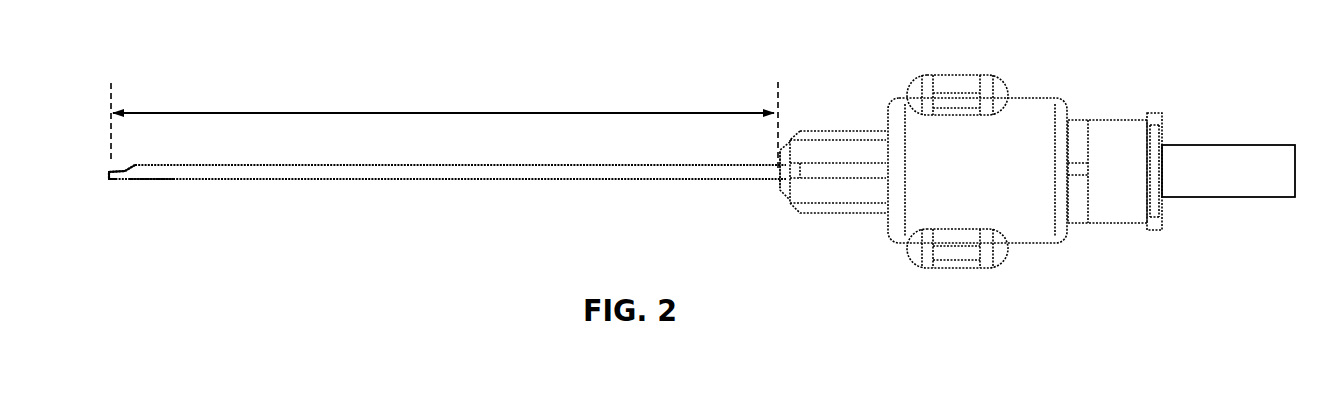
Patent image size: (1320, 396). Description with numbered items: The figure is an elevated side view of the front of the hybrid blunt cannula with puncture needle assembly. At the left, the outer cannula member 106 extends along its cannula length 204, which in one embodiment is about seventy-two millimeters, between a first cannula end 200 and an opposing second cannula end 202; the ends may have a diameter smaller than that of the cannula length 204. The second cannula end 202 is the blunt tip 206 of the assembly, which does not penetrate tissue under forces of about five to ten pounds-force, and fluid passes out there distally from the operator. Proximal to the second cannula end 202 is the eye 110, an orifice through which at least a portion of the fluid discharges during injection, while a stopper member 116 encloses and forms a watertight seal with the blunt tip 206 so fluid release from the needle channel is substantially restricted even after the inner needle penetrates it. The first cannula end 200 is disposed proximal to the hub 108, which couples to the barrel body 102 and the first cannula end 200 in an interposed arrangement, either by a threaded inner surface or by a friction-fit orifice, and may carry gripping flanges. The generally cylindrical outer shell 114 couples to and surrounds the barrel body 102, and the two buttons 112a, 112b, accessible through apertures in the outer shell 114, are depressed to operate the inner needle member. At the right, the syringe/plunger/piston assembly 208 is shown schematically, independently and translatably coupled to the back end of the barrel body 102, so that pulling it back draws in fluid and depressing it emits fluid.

The barrel body 102 is at (1072, 122).
The outer cannula member 106 is at (444, 198).
The hub 108 is at (812, 196).
The eye 110 is at (121, 162).
The button 112a is at (929, 78).
The button 112b is at (927, 267).
The outer shell 114 is at (1039, 261).
The stopper member 116 is at (107, 173).
The first cannula end 200 is at (776, 191).
The second cannula end 202 is at (150, 183).
The cannula length 204 is at (408, 113).
The blunt tip 206 is at (110, 184).
The syringe/plunger/piston assembly 208 is at (1195, 146).